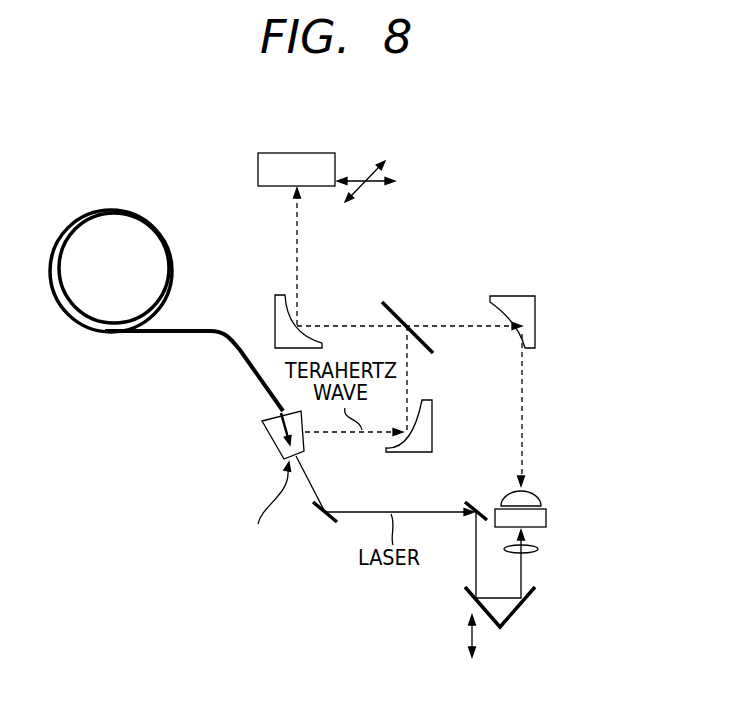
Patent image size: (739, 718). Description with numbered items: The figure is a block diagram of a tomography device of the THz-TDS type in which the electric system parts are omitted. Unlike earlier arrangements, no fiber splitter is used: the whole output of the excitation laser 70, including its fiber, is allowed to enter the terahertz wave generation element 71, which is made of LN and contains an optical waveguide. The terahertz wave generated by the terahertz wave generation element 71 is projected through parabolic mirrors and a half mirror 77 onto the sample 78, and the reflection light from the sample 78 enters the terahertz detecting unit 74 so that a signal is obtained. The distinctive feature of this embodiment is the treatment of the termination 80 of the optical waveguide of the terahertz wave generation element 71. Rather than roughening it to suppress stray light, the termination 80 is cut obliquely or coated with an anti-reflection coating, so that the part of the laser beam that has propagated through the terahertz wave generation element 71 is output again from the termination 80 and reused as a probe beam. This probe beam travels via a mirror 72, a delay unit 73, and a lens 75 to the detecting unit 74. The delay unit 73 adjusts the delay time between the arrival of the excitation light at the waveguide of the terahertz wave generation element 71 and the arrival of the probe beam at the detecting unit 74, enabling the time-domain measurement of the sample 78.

The excitation laser 70 is at (76, 322).
The terahertz wave generation element 71 is at (262, 426).
The mirror 72 is at (316, 525).
The delay unit 73 is at (508, 620).
The terahertz detecting unit 74 is at (548, 520).
The lens 75 is at (541, 549).
The half mirror 77 is at (408, 320).
The sample 78 is at (300, 163).
The termination 80 is at (268, 507).